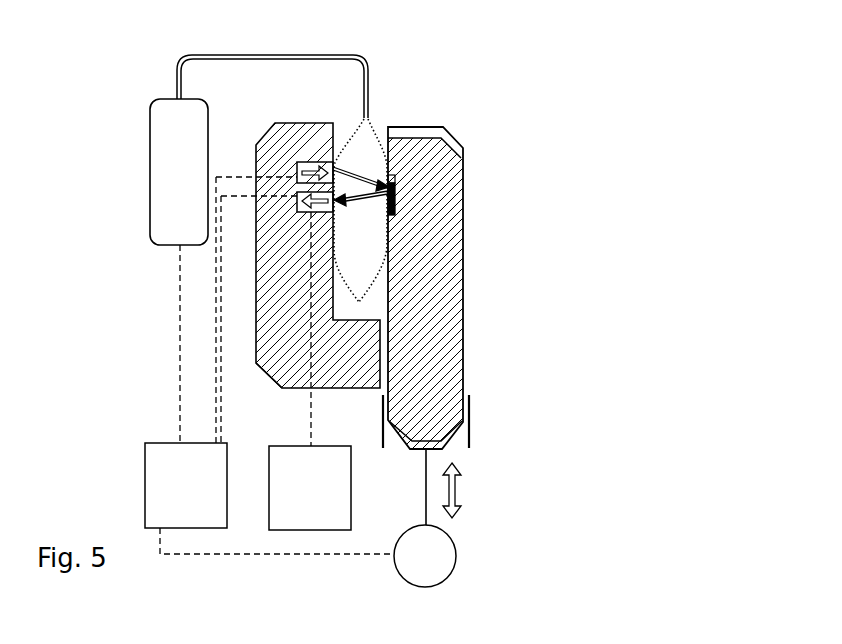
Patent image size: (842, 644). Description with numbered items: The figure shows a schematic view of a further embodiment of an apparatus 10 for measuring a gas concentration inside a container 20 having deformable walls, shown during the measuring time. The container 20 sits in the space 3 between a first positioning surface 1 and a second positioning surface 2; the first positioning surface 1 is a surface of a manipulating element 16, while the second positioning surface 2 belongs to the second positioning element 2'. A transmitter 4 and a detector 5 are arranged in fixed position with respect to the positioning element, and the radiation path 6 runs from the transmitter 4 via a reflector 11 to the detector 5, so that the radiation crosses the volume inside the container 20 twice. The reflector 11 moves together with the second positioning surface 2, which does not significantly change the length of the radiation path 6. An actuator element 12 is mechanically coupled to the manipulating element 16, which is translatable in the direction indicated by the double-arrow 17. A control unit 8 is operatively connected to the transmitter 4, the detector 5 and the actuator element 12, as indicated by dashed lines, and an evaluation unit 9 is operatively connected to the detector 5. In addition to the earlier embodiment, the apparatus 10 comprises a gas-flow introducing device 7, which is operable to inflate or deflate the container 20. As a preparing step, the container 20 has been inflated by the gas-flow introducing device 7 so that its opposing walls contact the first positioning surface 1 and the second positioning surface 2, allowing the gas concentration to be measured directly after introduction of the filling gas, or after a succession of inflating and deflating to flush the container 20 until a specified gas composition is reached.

The first positioning surface 1 is at (406, 150).
The second positioning surface 2 is at (318, 236).
The second positioning element 2' is at (260, 400).
The space between first and second positioning surface 3 is at (379, 122).
The transmitter 4 is at (288, 145).
The detector 5 is at (287, 213).
The radiation path 6 is at (347, 198).
The gas-flow introducing device 7 is at (166, 250).
The control unit 8 is at (269, 365).
The evaluation unit 9 is at (310, 371).
The apparatus 10 is at (303, 35).
The reflector 11 is at (395, 190).
The actuator element 12 is at (425, 518).
The manipulating element 16 is at (465, 368).
The movement of manipulating element 17 is at (456, 490).
The container 20 is at (383, 270).